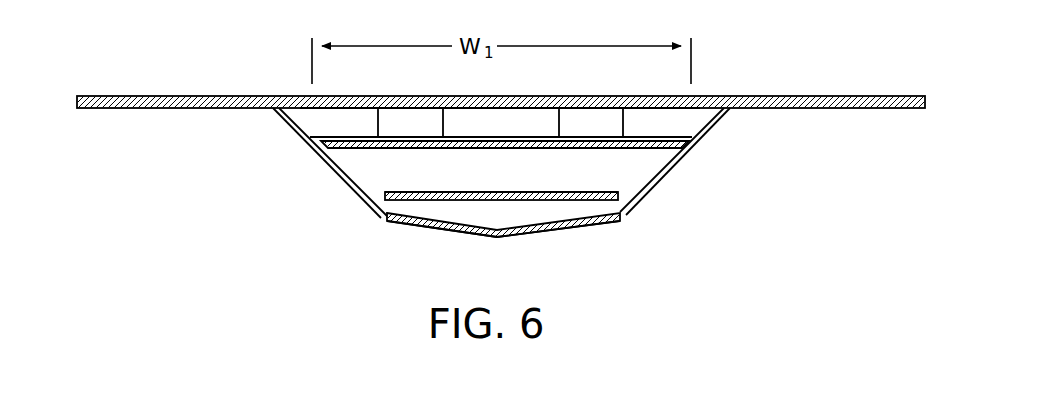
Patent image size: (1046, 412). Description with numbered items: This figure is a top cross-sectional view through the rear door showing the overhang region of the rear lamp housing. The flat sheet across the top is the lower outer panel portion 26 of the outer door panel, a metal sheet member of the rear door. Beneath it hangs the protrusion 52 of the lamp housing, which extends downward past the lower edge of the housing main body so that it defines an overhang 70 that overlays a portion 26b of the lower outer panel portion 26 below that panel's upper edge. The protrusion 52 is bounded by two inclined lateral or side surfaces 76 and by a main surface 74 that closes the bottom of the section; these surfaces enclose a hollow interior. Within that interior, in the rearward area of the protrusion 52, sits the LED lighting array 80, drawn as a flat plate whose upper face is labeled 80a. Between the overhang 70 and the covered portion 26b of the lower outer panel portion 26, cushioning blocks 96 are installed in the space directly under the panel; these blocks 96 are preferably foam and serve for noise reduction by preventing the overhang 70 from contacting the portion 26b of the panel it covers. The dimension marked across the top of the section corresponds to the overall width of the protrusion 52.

The lower outer panel portion 26 is at (156, 110).
The portion of the lower outer panel portion 26b is at (334, 110).
The cushioning blocks 96 is at (409, 123).
The overhang 70 is at (636, 208).
The side surfaces 76 is at (346, 181).
The main surface 74 is at (478, 233).
The protrusion 52 is at (421, 226).
The LED lighting array 80 is at (523, 190).
The upper surface of plate 80a is at (481, 191).